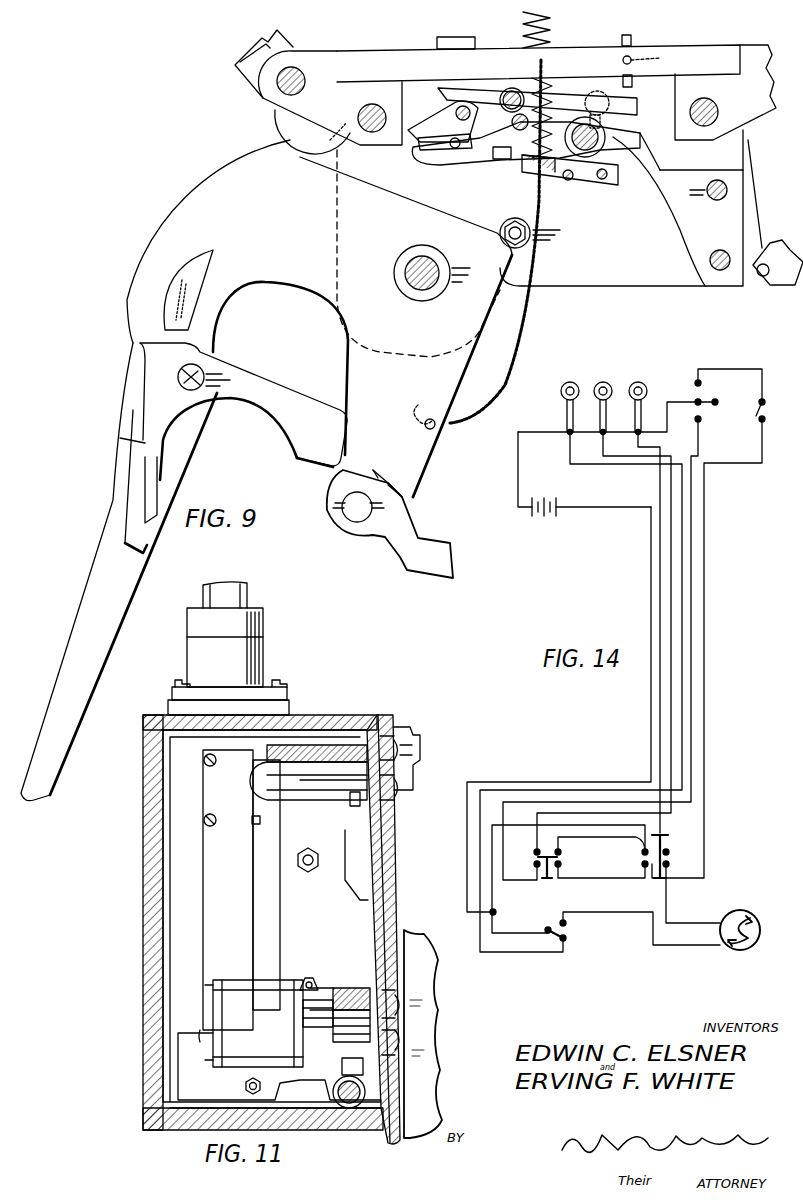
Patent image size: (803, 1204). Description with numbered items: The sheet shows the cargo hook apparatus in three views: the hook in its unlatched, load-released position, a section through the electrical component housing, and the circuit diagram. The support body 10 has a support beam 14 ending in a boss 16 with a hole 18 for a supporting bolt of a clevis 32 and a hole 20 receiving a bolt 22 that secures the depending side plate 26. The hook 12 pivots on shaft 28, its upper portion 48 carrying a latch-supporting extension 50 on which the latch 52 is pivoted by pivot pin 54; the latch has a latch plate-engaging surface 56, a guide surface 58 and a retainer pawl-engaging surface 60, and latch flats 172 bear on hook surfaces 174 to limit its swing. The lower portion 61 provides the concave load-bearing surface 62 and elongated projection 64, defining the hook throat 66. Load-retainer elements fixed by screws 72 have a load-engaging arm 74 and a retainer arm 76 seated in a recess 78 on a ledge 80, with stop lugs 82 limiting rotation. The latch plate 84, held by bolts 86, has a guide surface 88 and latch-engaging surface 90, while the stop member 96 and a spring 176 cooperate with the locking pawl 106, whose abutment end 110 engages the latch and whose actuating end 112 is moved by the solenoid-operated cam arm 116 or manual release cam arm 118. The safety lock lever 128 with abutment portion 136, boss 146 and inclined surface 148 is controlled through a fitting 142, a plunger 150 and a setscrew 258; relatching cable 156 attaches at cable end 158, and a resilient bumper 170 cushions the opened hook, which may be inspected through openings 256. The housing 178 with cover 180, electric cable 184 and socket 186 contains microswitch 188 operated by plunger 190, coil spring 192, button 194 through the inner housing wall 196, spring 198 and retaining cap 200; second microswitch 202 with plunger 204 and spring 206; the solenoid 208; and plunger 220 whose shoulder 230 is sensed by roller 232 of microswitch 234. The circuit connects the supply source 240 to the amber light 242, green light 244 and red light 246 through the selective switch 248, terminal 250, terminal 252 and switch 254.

In FIG. 9, the support body 10 is at (338, 398).
In FIG. 9, the hook 12 is at (137, 206).
In FIG. 9, the support beam 14 is at (400, 50).
In FIG. 9, the boss 16 is at (322, 50).
In FIG. 9, the hole 18 is at (303, 92).
In FIG. 9, the hole 20 is at (716, 104).
In FIG. 9, the bolt 22 is at (371, 132).
In FIG. 9, the side plate 26 is at (668, 286).
In FIG. 11, the side plate 26 is at (397, 860).
In FIG. 9, the shaft 28 is at (422, 292).
In FIG. 9, the clevis 32 is at (258, 52).
In FIG. 9, the upper portion of hook 48 is at (449, 384).
In FIG. 11, the upper portion of hook 48 is at (421, 968).
In FIG. 9, the latch-supporting extension 50 is at (418, 477).
In FIG. 9, the latch 52 is at (418, 536).
In FIG. 9, the pivot pin 54 is at (358, 507).
In FIG. 9, the latch plate-engaging surface 56 is at (398, 562).
In FIG. 9, the guide surface 58 is at (455, 570).
In FIG. 9, the retainer pawl-engaging surface 60 is at (452, 543).
In FIG. 9, the lower portion of hook 61 is at (262, 226).
In FIG. 9, the load-bearing surface 62 is at (228, 312).
In FIG. 9, the elongated projection 64 is at (105, 660).
In FIG. 9, the hook throat 66 is at (307, 354).
In FIG. 9, the screw 72 is at (140, 344).
In FIG. 9, the load-engaging arm 74 is at (248, 380).
In FIG. 9, the retainer arm 76 is at (135, 442).
In FIG. 9, the recess 78 is at (168, 497).
In FIG. 9, the ledge 80 is at (126, 529).
In FIG. 9, the stop lug 82 is at (168, 275).
In FIG. 9, the latch plate 84 is at (724, 238).
In FIG. 9, the bolt 86 is at (712, 200).
In FIG. 9, the guide surface 88 is at (680, 232).
In FIG. 9, the latch-engaging surface 90 is at (670, 165).
In FIG. 9, the stop member 96 is at (598, 185).
In FIG. 9, the locking pawl 106 is at (552, 90).
In FIG. 9, the abutment end 110 is at (635, 138).
In FIG. 9, the actuating end 112 is at (462, 150).
In FIG. 9, the solenoid-operated cam arm 116 is at (440, 148).
In FIG. 9, the manual release cam arm 118 is at (432, 120).
In FIG. 9, the safety lock lever 128 is at (586, 82).
In FIG. 9, the abutment portion 136 is at (502, 160).
In FIG. 9, the fitting 142 is at (472, 12).
In FIG. 11, the boss 146 is at (421, 752).
In FIG. 11, the inclined surface 148 is at (400, 730).
In FIG. 9, the plunger 150 is at (632, 36).
In FIG. 9, the cable 156 is at (535, 306).
In FIG. 9, the cable end 158 is at (418, 405).
In FIG. 9, the resilient bumper 170 is at (275, 128).
In FIG. 9, the latch flat 172 is at (394, 480).
In FIG. 9, the hook surface 174 is at (374, 470).
In FIG. 9, the spring 176 is at (552, 184).
In FIG. 11, the housing 178 is at (351, 710).
In FIG. 11, the cover 180 is at (143, 832).
In FIG. 11, the electric cable 184 is at (248, 592).
In FIG. 11, the socket 186 is at (265, 660).
In FIG. 14, the microswitch 188 is at (670, 838).
In FIG. 11, the microswitch 188 is at (272, 1037).
In FIG. 11, the plunger 190 is at (320, 1012).
In FIG. 11, the coil spring 192 is at (370, 1026).
In FIG. 9, the button 194 is at (513, 220).
In FIG. 11, the button 194 is at (400, 1000).
In FIG. 11, the inner housing wall 196 is at (385, 884).
In FIG. 11, the spring 198 is at (340, 996).
In FIG. 11, the retaining cap 200 is at (330, 965).
In FIG. 14, the second microswitch 202 is at (566, 936).
In FIG. 11, the second microswitch 202 is at (234, 846).
In FIG. 9, the plunger 204 is at (625, 108).
In FIG. 11, the plunger 204 is at (316, 792).
In FIG. 11, the spring 206 is at (345, 750).
In FIG. 14, the solenoid 208 is at (745, 910).
In FIG. 11, the plunger 220 is at (350, 1106).
In FIG. 11, the shoulder 230 is at (356, 1106).
In FIG. 11, the roller 232 is at (340, 1068).
In FIG. 14, the microswitch 234 is at (562, 864).
In FIG. 11, the microswitch 234 is at (208, 1092).
In FIG. 14, the electrical supply source 240 is at (558, 516).
In FIG. 14, the amber light 242 is at (560, 396).
In FIG. 14, the green light 244 is at (609, 400).
In FIG. 14, the red light 246 is at (646, 382).
In FIG. 14, the selective switch 248 is at (706, 400).
In FIG. 14, the terminal 250 is at (702, 424).
In FIG. 14, the terminal 252 is at (695, 380).
In FIG. 14, the switch 254 is at (764, 409).
In FIG. 9, the opening 256 is at (645, 170).
In FIG. 9, the setscrew 258 is at (622, 55).